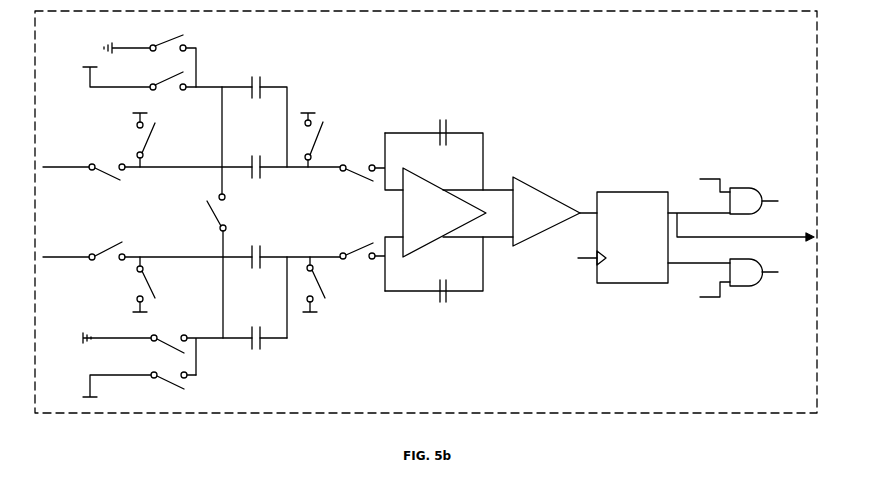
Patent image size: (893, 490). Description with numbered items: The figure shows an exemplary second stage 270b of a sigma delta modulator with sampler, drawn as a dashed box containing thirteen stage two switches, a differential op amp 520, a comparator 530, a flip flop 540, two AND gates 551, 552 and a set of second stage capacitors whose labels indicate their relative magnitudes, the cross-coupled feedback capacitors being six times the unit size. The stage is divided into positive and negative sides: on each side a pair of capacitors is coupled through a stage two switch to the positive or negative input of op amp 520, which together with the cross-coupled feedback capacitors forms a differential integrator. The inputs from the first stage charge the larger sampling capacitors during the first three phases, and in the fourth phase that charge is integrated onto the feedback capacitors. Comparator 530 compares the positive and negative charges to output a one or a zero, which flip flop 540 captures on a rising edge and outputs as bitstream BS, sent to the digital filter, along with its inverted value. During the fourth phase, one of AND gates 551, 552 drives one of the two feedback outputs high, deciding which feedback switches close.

The second stage 270b is at (800, 43).
The differential op amp 520 is at (417, 220).
The comparator 530 is at (526, 220).
The flip flop 540 is at (622, 244).
The AND gate 551 is at (746, 188).
The AND gate 552 is at (746, 287).